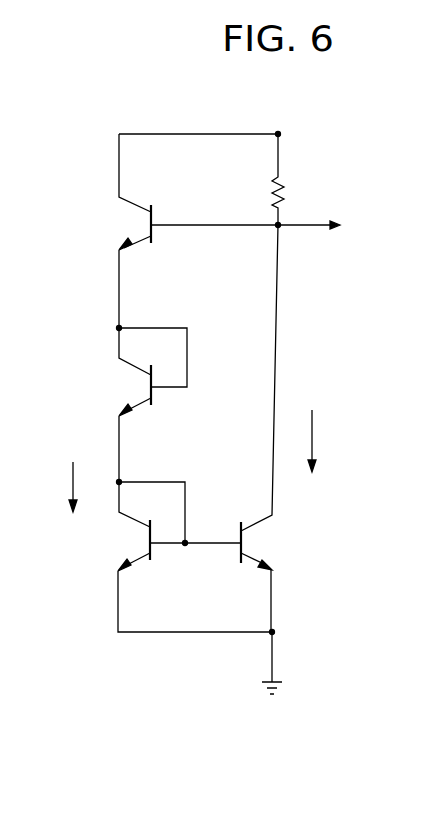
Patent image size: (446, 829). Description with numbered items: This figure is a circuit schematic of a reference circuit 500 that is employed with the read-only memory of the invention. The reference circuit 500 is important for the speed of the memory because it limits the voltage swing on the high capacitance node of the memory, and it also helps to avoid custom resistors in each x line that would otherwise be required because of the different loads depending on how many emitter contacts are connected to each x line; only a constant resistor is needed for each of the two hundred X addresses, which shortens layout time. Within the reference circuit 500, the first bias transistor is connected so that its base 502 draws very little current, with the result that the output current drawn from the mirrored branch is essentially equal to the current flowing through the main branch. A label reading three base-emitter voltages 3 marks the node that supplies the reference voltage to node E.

The reference circuit 500 is at (237, 404).
The base of transistor QB1 502 is at (153, 212).
The 3VBE output node 3 is at (283, 227).